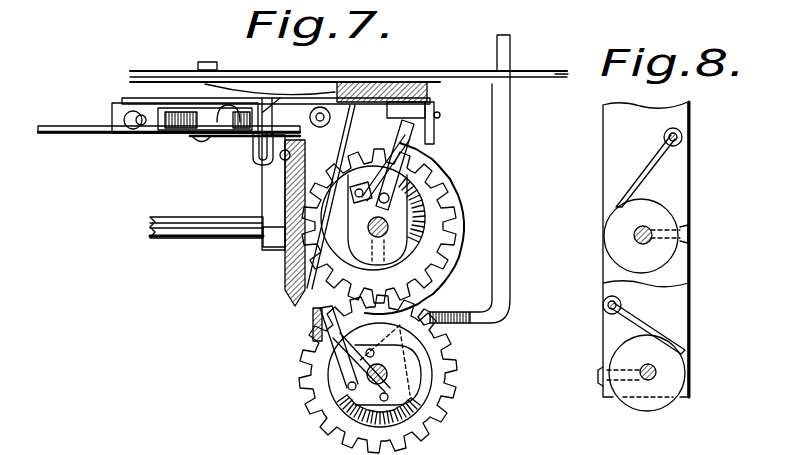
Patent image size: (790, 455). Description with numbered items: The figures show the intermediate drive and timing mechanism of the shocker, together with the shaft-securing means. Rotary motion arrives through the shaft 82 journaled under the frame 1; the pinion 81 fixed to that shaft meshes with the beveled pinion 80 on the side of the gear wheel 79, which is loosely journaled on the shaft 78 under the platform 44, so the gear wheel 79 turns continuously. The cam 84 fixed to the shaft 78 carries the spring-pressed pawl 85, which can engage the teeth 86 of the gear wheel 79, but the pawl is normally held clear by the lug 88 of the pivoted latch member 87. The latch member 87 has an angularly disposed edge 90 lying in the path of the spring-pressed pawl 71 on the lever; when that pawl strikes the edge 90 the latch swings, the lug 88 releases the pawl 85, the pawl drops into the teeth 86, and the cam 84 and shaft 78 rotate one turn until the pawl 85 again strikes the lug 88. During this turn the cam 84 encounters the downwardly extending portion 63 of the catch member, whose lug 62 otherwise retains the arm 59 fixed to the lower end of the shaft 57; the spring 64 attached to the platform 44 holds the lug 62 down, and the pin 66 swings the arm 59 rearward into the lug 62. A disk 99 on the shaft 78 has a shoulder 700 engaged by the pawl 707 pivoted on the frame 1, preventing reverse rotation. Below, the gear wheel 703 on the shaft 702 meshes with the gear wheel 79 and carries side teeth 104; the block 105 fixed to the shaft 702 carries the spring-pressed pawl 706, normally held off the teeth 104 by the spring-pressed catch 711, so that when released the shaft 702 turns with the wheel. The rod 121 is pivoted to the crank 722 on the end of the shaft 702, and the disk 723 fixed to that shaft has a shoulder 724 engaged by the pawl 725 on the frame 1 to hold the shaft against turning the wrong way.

In FIG. 7, the platform 44 is at (553, 82).
In FIG. 7, the shaft 57 is at (210, 62).
In FIG. 7, the arm 59 is at (177, 132).
In FIG. 7, the lug 62 is at (217, 115).
In FIG. 7, the downwardly extending portion 63 is at (275, 195).
In FIG. 7, the spring 64 is at (262, 98).
In FIG. 7, the pin 66 is at (240, 122).
In FIG. 7, the spring-pressed pawl 71 is at (260, 136).
In FIG. 7, the shaft 78 is at (386, 225).
In FIG. 8, the shaft 78 is at (638, 242).
In FIG. 7, the gear wheel 79 is at (420, 195).
In FIG. 7, the beveled pinion 80 is at (415, 185).
In FIG. 7, the pinion 81 is at (290, 298).
In FIG. 7, the shaft 82 is at (206, 239).
In FIG. 7, the cam 84 is at (300, 265).
In FIG. 7, the spring-pressed pawl 85 is at (398, 135).
In FIG. 7, the teeth 86 is at (442, 252).
In FIG. 7, the latch member 87 is at (358, 105).
In FIG. 7, the lug 88 is at (435, 135).
In FIG. 7, the angularly disposed edge 90 is at (165, 98).
In FIG. 7, the teeth 104 is at (315, 405).
In FIG. 7, the block 105 is at (418, 407).
In FIG. 7, the rod 121 is at (504, 179).
In FIG. 7, the shaft 702 is at (398, 378).
In FIG. 8, the shaft 702 is at (652, 382).
In FIG. 7, the gear wheel 703 is at (432, 372).
In FIG. 7, the spring-pressed pawl 706 is at (335, 345).
In FIG. 7, the spring-pressed catch 711 is at (313, 322).
In FIG. 7, the crank 722 is at (432, 345).
In FIG. 8, the frame 1 is at (612, 153).
In FIG. 8, the disk 99 is at (623, 228).
In FIG. 8, the shoulder 700 is at (606, 208).
In FIG. 8, the pawl 707 is at (660, 179).
In FIG. 8, the disk 723 is at (670, 382).
In FIG. 8, the shoulder 724 is at (683, 357).
In FIG. 8, the pawl 725 is at (648, 328).